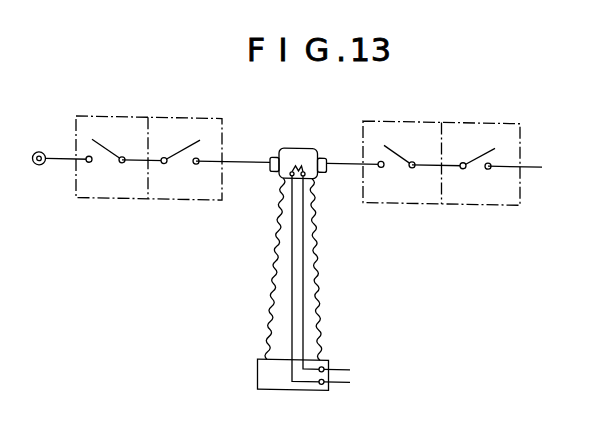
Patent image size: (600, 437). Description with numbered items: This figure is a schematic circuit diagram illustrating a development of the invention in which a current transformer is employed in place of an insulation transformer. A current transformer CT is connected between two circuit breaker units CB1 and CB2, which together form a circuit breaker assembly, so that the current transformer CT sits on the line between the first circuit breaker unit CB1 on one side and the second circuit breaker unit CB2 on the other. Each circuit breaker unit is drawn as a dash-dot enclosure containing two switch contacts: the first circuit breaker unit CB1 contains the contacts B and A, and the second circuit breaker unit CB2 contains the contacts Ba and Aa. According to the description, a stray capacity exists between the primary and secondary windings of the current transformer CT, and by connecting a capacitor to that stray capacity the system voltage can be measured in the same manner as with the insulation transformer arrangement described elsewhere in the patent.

The circuit breaker unit CB1 is at (148, 116).
The circuit breaker unit CB2 is at (442, 116).
The current transformer CT is at (296, 144).
The contact B of first circuit breaker B is at (122, 144).
The contact A of first circuit breaker A is at (185, 144).
The auxiliary contact Ba of second circuit breaker Ba is at (422, 144).
The auxiliary contact Aa of second circuit breaker Aa is at (462, 144).